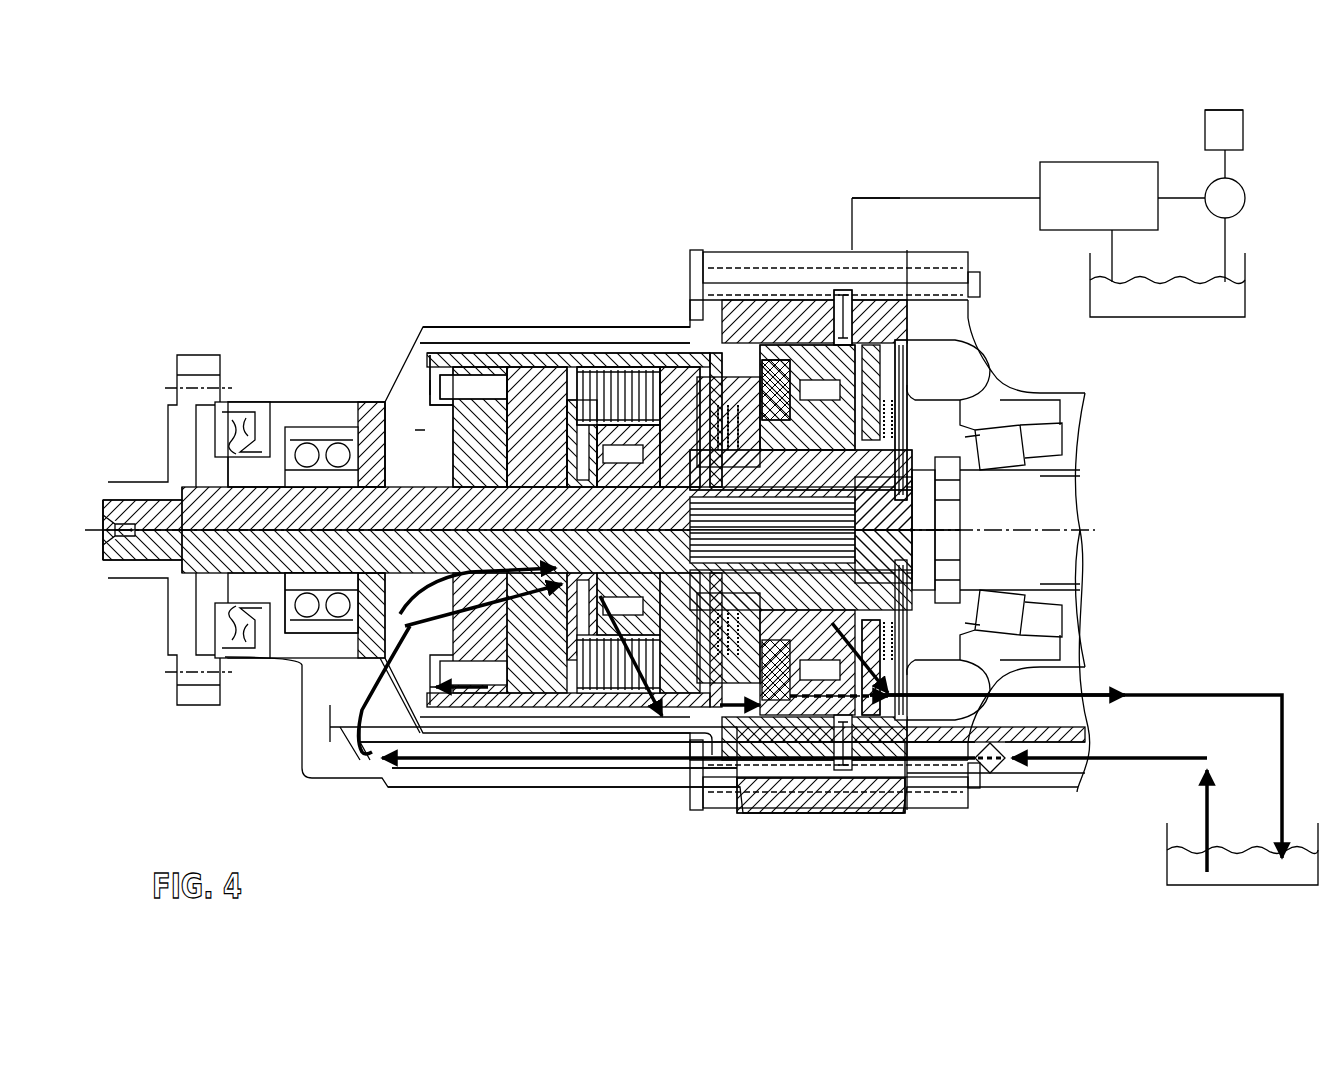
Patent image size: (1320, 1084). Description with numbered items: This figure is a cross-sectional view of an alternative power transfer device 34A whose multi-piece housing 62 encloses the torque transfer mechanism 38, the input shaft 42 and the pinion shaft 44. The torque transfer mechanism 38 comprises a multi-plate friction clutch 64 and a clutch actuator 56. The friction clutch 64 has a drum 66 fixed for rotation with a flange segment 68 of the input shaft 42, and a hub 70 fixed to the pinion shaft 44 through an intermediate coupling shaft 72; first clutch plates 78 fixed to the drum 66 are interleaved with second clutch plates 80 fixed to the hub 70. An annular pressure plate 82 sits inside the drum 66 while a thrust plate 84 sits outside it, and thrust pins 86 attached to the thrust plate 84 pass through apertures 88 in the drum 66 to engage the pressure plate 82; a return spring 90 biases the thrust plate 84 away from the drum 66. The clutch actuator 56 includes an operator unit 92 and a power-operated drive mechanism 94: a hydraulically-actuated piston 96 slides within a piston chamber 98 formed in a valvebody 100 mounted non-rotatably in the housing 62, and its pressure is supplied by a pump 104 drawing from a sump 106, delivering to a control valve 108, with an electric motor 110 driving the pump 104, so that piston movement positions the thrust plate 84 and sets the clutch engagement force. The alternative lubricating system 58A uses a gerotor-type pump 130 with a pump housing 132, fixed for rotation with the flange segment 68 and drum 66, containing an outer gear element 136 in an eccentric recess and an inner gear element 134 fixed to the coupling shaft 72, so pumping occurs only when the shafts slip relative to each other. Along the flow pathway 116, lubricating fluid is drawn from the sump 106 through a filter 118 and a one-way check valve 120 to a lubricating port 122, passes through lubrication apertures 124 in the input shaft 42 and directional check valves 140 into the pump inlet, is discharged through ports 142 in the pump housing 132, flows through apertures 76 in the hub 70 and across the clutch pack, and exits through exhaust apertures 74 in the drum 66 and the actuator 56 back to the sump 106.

The alternative power transfer device 34A is at (385, 268).
The torque transfer mechanism 38 is at (600, 740).
The input shaft 42 is at (105, 545).
The pinion shaft 44 is at (1080, 505).
The clutch actuator 56 is at (936, 163).
The alternative lubricating system 58A is at (475, 800).
The housing 62 is at (440, 330).
The multi-plate friction clutch 64 is at (640, 350).
The drum 66 is at (690, 370).
The flange segment 68 is at (453, 370).
The hub 70 is at (610, 440).
The intermediate coupling shaft 72 is at (400, 520).
The apertures 74 is at (628, 360).
The apertures 76 is at (625, 455).
The first clutch plates 78 is at (590, 380).
The second clutch plates 80 is at (690, 465).
The pressure plate 82 is at (720, 375).
The thrust plate 84 is at (775, 380).
The thrust pins 86 is at (760, 390).
The apertures 88 is at (748, 385).
The return spring 90 is at (843, 290).
The operator unit 92 is at (915, 348).
The power-operated drive mechanism 94 is at (1182, 105).
The piston 96 is at (860, 635).
The piston chamber 98 is at (860, 685).
The valvebody 100 is at (880, 360).
The pump 104 is at (1243, 200).
The sump 106 is at (1200, 310).
The control valve 108 is at (1062, 168).
The electric motor 110 is at (1243, 128).
The flow pathway 116 is at (690, 790).
The filter 118 is at (998, 770).
The one-way check valve 120 is at (780, 790).
The lubricating port 122 is at (355, 755).
The lubrication apertures 124 is at (410, 445).
The gerotor-type pump 130 is at (512, 405).
The pump housing 132 is at (500, 372).
The inner gear element 134 is at (440, 600).
The outer gear element 136 is at (465, 410).
The directional check valves 140 is at (385, 440).
The ports 142 is at (512, 700).